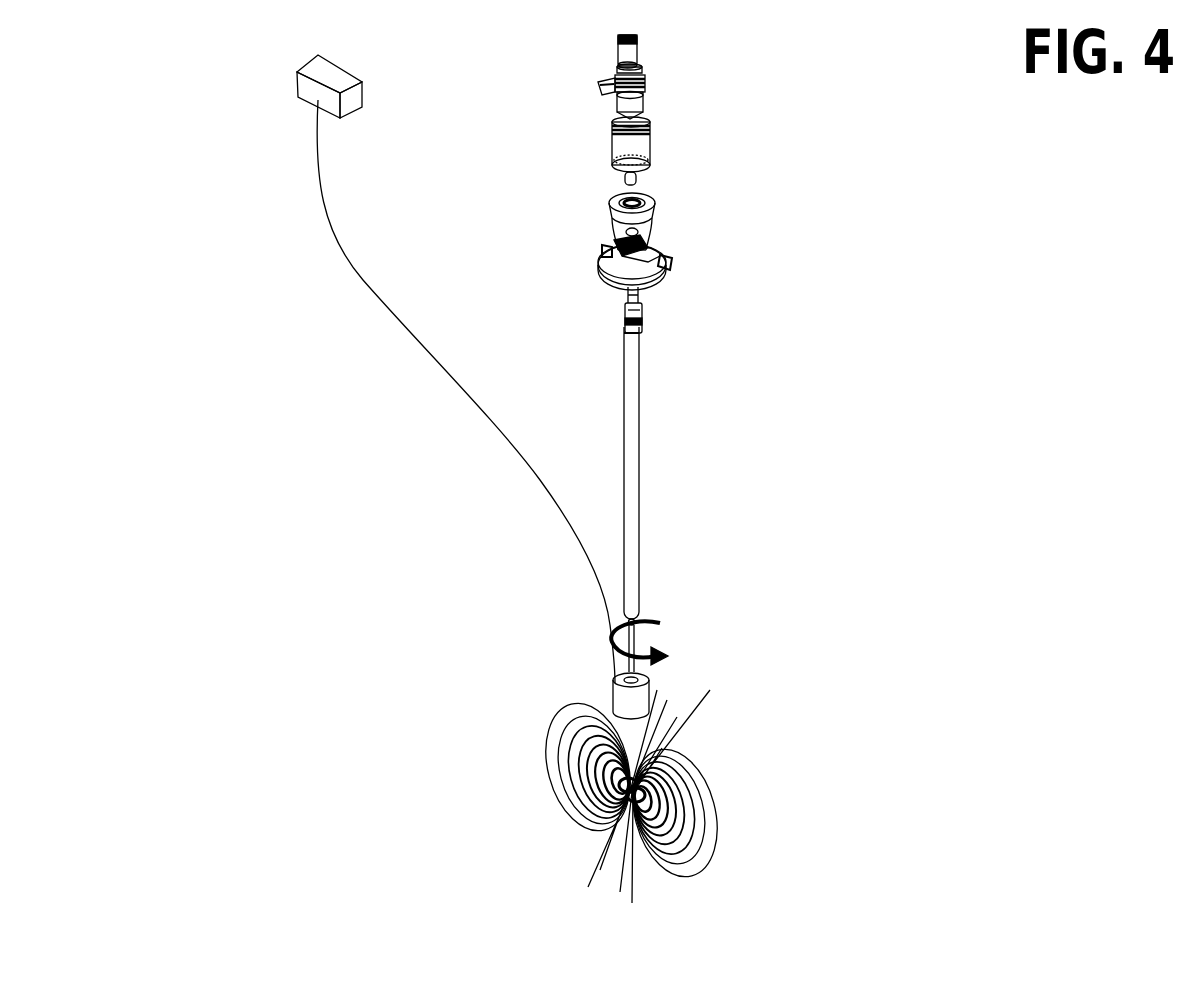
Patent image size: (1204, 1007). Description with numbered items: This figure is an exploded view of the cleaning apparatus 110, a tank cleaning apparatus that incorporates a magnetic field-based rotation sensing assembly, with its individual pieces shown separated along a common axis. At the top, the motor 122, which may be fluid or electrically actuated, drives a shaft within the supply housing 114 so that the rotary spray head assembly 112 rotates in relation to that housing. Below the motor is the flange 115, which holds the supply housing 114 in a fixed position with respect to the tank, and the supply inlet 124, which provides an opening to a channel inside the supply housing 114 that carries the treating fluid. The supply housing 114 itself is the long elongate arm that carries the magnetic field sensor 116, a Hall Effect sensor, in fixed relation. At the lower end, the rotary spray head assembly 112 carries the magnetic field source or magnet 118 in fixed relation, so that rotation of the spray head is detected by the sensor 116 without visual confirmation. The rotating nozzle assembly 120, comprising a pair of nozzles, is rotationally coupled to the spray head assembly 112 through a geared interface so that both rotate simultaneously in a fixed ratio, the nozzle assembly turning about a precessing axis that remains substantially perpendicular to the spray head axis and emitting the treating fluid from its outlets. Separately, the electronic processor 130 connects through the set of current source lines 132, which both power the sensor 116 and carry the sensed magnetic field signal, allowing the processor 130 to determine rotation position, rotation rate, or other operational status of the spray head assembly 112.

The cleaning apparatus 110 is at (558, 264).
The rotary spray head assembly 112 is at (614, 775).
The supply housing 114 is at (636, 525).
The flange 115 is at (665, 262).
The magnetic field sensor 116 is at (613, 697).
The magnetic field source (magnet) 118 is at (592, 792).
The rotating nozzle assembly 120 is at (686, 853).
The motor 122 is at (633, 142).
The supply inlet 124 is at (668, 268).
The electronic processor 130 is at (300, 82).
The current source lines 132 is at (407, 330).